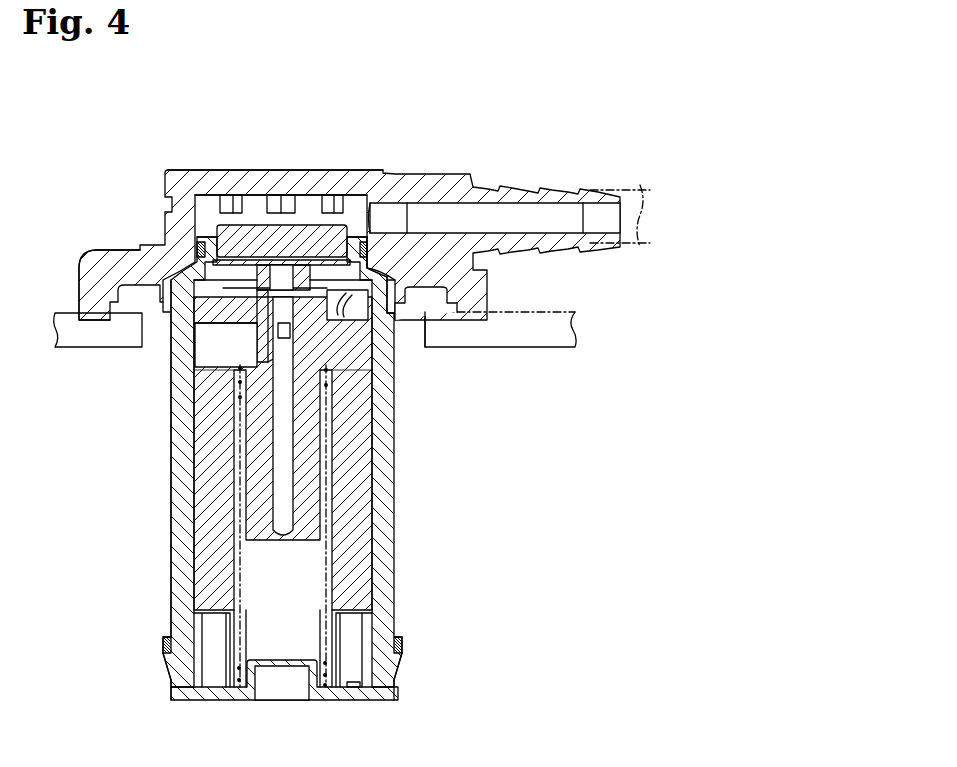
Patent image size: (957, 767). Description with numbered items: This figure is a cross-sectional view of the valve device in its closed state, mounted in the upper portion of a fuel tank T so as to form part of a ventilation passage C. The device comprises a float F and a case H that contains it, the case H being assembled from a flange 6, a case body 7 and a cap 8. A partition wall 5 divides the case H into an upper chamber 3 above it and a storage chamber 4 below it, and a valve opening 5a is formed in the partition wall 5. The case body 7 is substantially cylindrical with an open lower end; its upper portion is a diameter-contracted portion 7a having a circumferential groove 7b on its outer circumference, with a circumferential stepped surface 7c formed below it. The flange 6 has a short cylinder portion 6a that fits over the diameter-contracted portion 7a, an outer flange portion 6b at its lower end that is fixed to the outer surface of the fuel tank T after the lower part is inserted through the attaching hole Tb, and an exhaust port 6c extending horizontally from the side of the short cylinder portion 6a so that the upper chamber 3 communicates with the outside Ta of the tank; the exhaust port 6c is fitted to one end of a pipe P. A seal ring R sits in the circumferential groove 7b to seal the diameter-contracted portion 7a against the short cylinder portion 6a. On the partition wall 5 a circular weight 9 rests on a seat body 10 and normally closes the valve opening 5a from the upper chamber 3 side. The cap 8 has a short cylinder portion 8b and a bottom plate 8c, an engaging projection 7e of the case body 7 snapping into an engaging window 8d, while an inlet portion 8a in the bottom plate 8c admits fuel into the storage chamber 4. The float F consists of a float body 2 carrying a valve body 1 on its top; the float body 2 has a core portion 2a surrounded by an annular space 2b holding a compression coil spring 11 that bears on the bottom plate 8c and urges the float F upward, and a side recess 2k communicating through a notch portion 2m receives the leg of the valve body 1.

The valve body 1 is at (279, 278).
The float body 2 is at (360, 533).
The core portion 2a is at (300, 480).
The annular space 2b is at (333, 437).
The side recess 2k is at (245, 323).
The notch portion 2m is at (220, 353).
The upper chamber 3 is at (300, 215).
The storage chamber 4 is at (350, 627).
The partition wall 5 is at (313, 243).
The valve opening 5a is at (262, 257).
The flange 6 is at (103, 250).
The short cylinder portion 6a is at (195, 173).
The outer flange portion 6b is at (90, 267).
The exhaust port 6c is at (542, 200).
The case body 7 is at (387, 570).
The diameter-contracted portion 7a is at (353, 237).
The circumferential groove 7b is at (370, 265).
The circumferential stepped surface 7c is at (380, 273).
The engaging projection 7e is at (163, 663).
The cap 8 is at (215, 700).
The inlet portion 8a is at (290, 683).
The short cylinder portion 8b is at (403, 645).
The bottom plate 8c is at (333, 700).
The engaging window 8d is at (170, 677).
The weight 9 is at (237, 223).
The seat body 10 is at (220, 267).
The compression coil spring 11 is at (237, 540).
The seal ring R is at (203, 262).
The float F is at (210, 437).
The case H is at (180, 498).
The fuel tank T is at (540, 317).
The outside of the tank Ta is at (516, 114).
The attaching hole Tb is at (413, 323).
The pipe P is at (637, 217).
The ventilation passage C is at (647, 240).